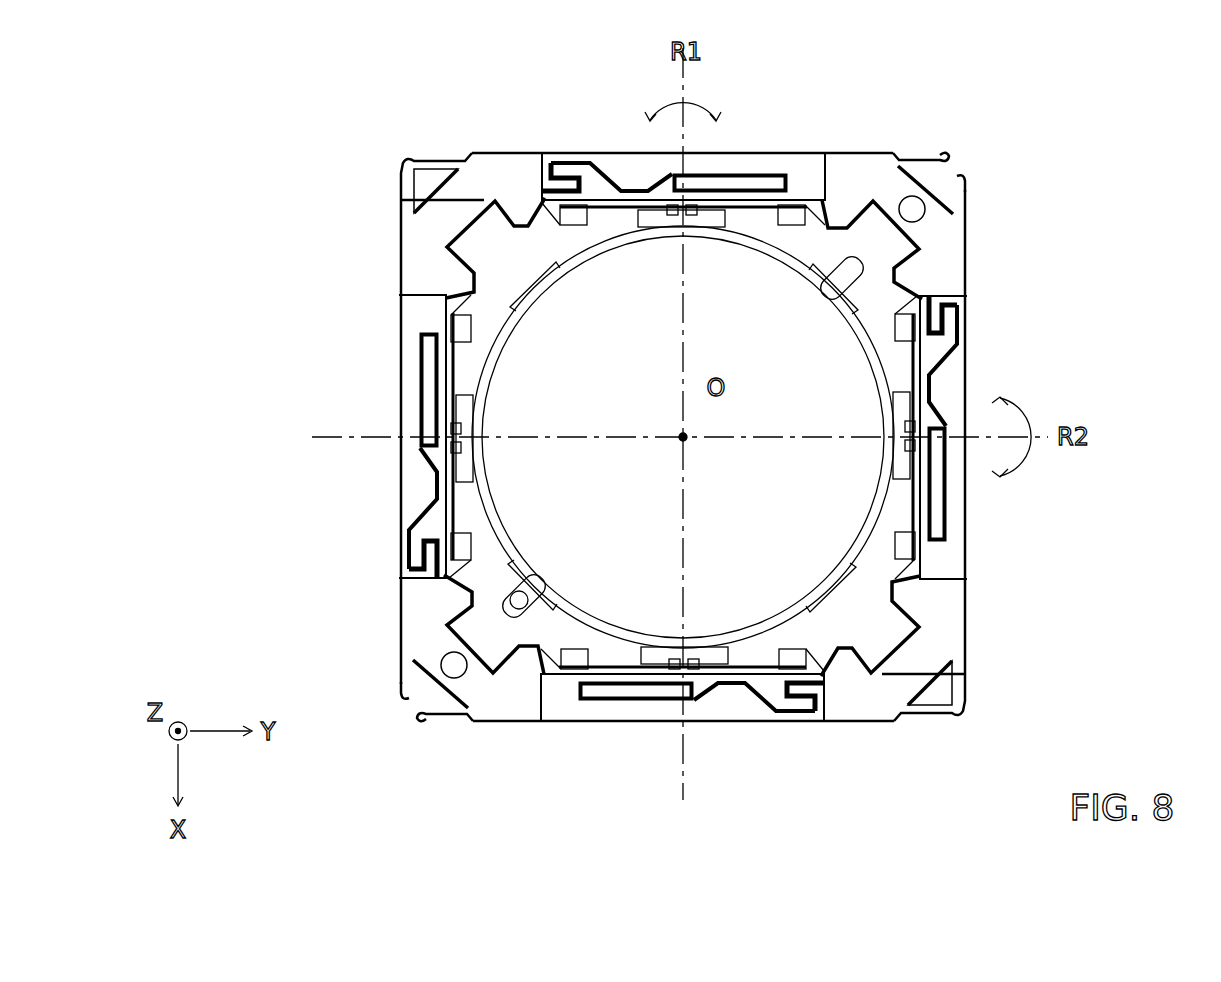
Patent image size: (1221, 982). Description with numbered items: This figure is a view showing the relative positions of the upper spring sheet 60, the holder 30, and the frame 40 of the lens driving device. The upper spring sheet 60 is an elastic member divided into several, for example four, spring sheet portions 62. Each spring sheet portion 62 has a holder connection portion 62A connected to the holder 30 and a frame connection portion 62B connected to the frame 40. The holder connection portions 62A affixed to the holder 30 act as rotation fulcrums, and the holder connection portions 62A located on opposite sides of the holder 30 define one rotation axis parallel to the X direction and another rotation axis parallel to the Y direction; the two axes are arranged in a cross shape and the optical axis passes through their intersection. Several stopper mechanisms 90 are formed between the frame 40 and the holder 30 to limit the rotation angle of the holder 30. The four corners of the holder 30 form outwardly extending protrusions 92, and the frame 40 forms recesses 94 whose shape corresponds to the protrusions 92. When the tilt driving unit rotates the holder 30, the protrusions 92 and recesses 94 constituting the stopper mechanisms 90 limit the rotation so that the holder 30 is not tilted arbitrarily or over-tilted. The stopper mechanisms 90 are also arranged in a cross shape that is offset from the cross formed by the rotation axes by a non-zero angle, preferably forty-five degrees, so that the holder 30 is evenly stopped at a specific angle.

The holder 30 is at (486, 625).
The frame 40 is at (416, 308).
The upper spring sheet 60 is at (424, 268).
The spring sheet portion 62 is at (478, 82).
The holder connection portion 62A is at (648, 217).
The frame connection portion 62B is at (506, 172).
The stopper mechanism 90 is at (835, 82).
The protrusion 92 is at (876, 210).
The recess 94 is at (855, 203).